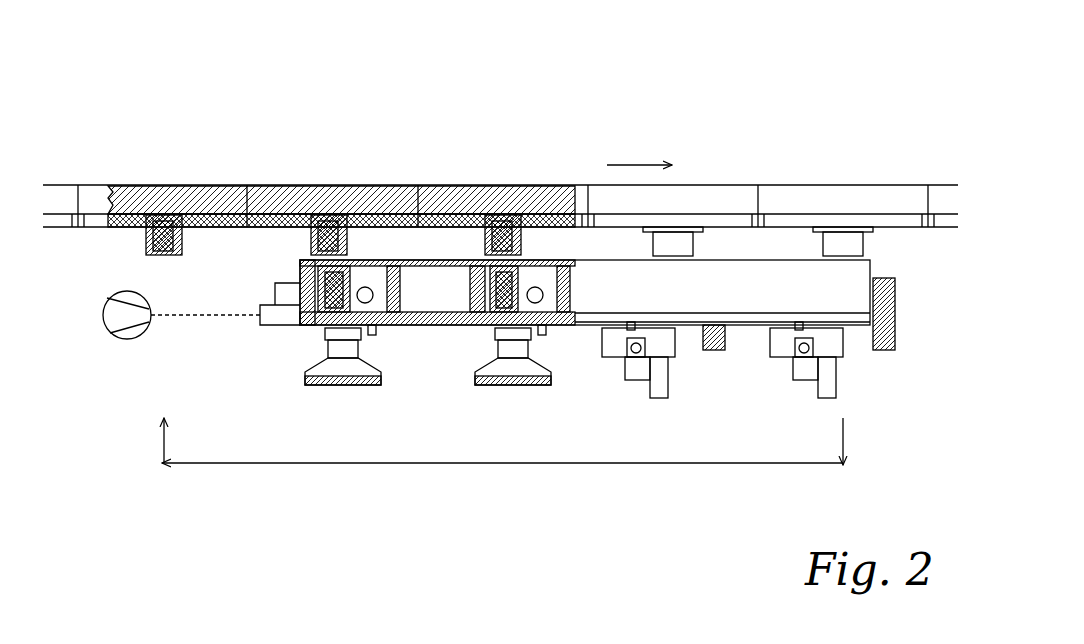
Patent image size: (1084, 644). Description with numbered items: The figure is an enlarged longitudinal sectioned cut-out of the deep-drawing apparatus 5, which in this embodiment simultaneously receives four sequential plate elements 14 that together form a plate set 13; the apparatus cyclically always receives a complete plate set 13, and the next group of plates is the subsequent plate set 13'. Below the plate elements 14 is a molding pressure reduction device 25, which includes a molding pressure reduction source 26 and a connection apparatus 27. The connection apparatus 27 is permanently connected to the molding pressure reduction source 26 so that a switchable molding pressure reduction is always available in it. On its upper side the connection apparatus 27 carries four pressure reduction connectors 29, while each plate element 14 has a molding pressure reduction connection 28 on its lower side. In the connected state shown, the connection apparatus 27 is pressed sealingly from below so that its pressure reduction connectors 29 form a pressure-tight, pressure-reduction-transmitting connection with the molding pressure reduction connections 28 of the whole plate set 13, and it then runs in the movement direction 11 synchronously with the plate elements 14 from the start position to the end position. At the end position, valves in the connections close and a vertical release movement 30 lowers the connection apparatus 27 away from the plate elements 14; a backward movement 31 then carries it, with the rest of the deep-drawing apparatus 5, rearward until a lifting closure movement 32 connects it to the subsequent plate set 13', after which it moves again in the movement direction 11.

The deep-drawing apparatus 5 is at (722, 134).
The movement direction 11 is at (628, 165).
The plate set 13 is at (533, 138).
The subsequent plate set 13' is at (145, 138).
The plate element 14 is at (215, 183).
The molding pressure reduction device 25 is at (297, 348).
The molding pressure reduction source 26 is at (103, 318).
The connection apparatus 27 is at (590, 326).
The molding pressure reduction connection 28 is at (148, 240).
The pressure reduction connector 29 is at (352, 264).
The release movement 30 is at (847, 440).
The backward movement 31 is at (452, 462).
The lifting closure movement 32 is at (160, 438).